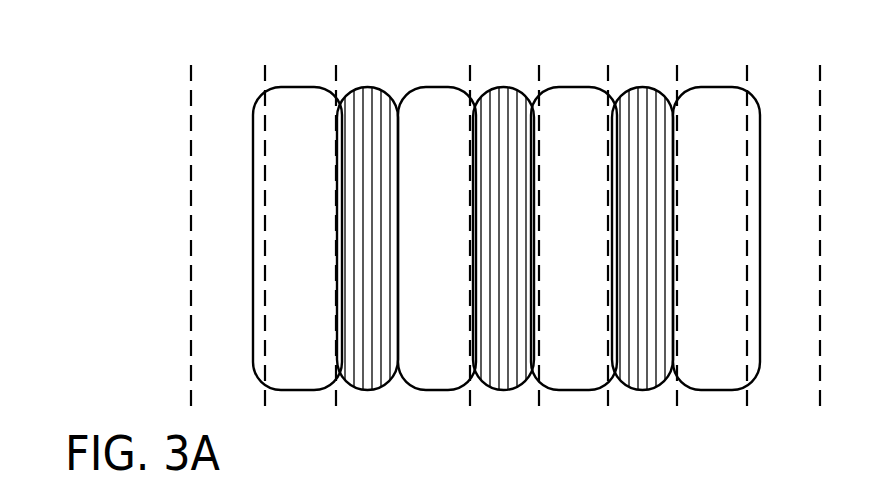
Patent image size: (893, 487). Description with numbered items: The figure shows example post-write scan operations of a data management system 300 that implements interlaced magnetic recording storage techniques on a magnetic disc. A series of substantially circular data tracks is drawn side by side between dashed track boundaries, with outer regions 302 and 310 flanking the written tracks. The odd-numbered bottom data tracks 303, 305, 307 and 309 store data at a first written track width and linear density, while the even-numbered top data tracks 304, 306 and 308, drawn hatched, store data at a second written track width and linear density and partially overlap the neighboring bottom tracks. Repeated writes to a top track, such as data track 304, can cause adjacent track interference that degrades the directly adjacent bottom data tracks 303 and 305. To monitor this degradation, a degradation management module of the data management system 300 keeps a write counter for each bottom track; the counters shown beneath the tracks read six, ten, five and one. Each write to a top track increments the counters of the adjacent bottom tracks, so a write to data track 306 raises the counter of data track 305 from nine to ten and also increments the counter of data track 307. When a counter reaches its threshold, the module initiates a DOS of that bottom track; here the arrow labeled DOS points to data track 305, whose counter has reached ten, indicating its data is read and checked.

The data management system 300 is at (144, 268).
The first region 302 is at (246, 126).
The bottom data track 303 is at (312, 133).
The top data track 304 is at (389, 133).
The bottom data track 305 is at (452, 133).
The top data track 306 is at (519, 133).
The bottom data track 307 is at (589, 133).
The top data track 308 is at (661, 133).
The bottom data track 309 is at (725, 132).
The last region 310 is at (807, 128).
The element DOS is at (422, 92).